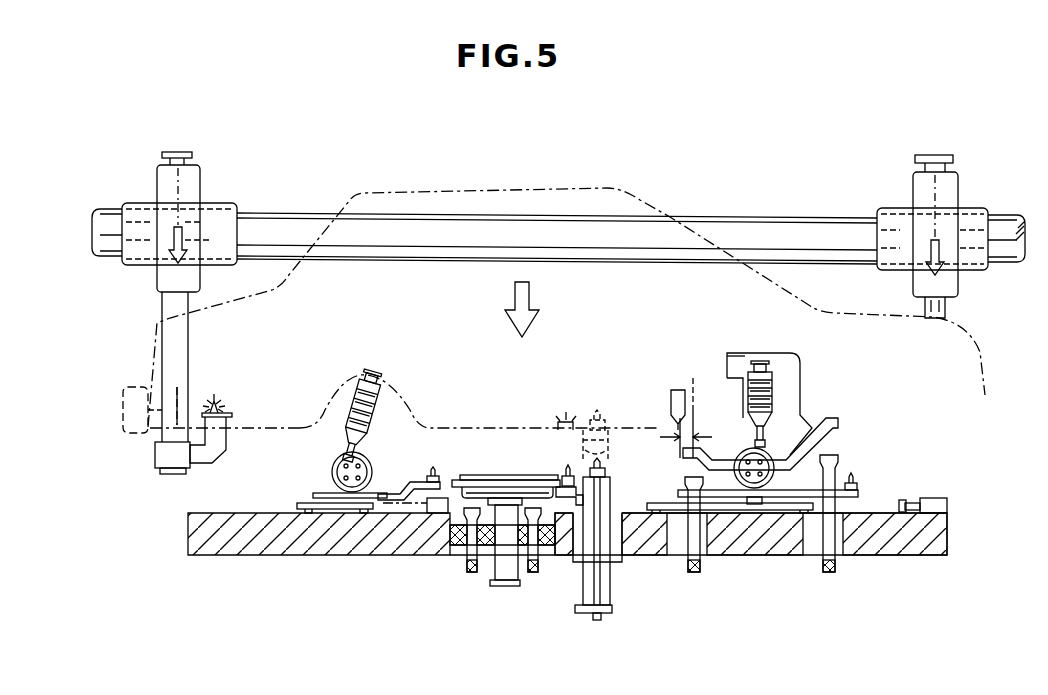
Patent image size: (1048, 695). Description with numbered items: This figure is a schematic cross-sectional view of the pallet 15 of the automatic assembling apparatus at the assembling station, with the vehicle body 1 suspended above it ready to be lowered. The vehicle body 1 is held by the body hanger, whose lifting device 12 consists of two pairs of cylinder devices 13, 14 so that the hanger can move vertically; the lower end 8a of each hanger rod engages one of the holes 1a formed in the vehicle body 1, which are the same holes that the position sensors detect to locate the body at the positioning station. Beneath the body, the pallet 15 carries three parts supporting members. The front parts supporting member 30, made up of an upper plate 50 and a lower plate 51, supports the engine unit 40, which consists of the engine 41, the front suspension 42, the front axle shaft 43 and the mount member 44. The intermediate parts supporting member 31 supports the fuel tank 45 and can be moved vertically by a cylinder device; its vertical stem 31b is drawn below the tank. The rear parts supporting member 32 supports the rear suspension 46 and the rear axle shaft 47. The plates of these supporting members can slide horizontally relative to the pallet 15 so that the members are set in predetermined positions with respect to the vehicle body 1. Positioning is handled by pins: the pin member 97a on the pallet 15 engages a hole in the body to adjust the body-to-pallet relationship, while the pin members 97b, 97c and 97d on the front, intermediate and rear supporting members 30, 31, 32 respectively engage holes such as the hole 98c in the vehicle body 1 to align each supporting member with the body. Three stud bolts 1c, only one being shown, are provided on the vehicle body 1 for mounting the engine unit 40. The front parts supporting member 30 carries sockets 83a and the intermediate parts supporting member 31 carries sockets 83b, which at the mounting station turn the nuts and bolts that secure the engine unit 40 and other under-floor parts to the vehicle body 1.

The vehicle body 1 is at (523, 185).
The holes 1a is at (210, 400).
The stud bolts 1c is at (672, 412).
The lower end of the rod of the body hanger 8a is at (948, 303).
The lifting device 12 is at (178, 152).
The cylinder device 13 is at (913, 178).
The cylinder device 14 is at (200, 172).
The pallet 15 is at (905, 557).
The front parts supporting member 30 is at (860, 493).
The intermediate parts supporting member 31 is at (450, 520).
The support stem 31b is at (503, 580).
The rear parts supporting member 32 is at (298, 504).
The engine unit 40 is at (805, 372).
The engine 41 is at (740, 356).
The front suspension 42 is at (770, 385).
The front axle shaft 43 is at (765, 455).
The mount member 44 is at (838, 424).
The fuel tank 45 is at (508, 483).
The rear suspension 46 is at (383, 392).
The rear axle shaft 47 is at (333, 465).
The upper plate 50 is at (800, 487).
The lower plate 51 is at (740, 520).
The sockets 83a is at (688, 556).
The sockets 83b is at (470, 560).
The pin member 97a is at (610, 490).
The pin member 97b is at (858, 481).
The pin member 97c is at (566, 470).
The pin member 97d is at (433, 470).
The hole 98c is at (568, 422).